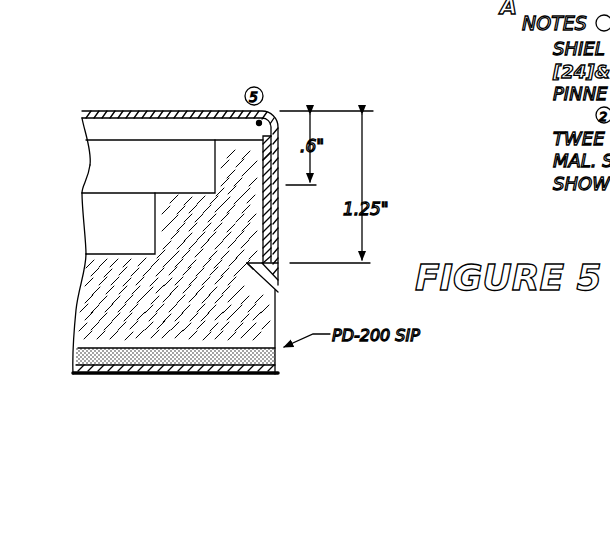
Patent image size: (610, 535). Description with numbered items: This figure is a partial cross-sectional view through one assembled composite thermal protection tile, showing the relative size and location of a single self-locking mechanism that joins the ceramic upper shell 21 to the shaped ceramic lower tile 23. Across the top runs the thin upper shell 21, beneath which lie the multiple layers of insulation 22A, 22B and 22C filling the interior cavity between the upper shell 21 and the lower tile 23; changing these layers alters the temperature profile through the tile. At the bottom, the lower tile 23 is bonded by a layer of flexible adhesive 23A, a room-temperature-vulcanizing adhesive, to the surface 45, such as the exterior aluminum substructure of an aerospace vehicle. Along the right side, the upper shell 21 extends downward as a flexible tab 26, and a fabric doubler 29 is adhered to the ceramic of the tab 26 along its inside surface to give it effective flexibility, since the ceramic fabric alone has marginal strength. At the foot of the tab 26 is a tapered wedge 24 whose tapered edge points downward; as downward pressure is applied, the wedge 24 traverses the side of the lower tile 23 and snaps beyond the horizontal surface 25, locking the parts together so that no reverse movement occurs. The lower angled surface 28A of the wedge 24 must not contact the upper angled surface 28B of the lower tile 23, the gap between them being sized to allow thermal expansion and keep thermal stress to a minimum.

The upper shell 21 is at (270, 112).
The layer of insulation 22A is at (187, 133).
The layer of insulation 22B is at (157, 167).
The layer of insulation 22C is at (132, 220).
The fabric doubler 29 is at (263, 158).
The tab 26 is at (280, 216).
The horizontal surface 25 is at (277, 268).
The tapered wedge 24 is at (275, 272).
The upper angled surface 28B is at (270, 281).
The lower angled surface 28A is at (252, 268).
The lower tile 23 is at (282, 333).
The layer of flexible adhesive 23A is at (280, 357).
The surface 45 is at (284, 375).